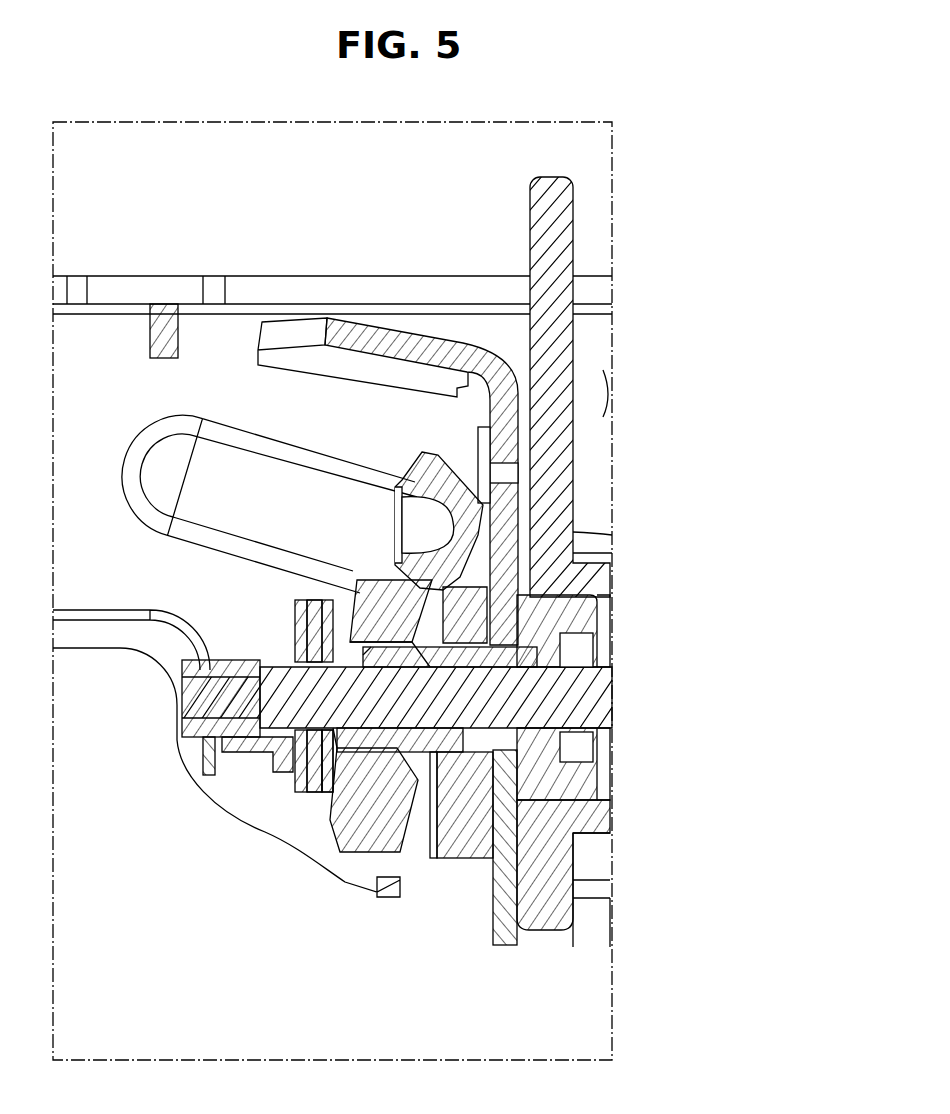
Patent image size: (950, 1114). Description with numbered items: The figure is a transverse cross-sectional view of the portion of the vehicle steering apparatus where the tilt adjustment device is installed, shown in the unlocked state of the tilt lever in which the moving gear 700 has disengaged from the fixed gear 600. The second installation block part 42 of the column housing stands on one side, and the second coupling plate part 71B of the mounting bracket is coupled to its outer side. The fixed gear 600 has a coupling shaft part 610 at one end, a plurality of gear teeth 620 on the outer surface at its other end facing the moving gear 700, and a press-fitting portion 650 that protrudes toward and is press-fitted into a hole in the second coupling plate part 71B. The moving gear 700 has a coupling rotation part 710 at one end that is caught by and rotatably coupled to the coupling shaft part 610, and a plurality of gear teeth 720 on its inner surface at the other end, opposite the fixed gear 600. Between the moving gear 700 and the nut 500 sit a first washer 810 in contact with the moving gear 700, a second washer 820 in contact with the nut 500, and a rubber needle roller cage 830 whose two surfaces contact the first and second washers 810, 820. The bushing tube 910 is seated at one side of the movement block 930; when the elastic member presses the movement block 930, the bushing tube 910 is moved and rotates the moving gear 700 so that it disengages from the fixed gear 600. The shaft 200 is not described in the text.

The second installation block part 42 is at (530, 230).
The second coupling plate part 71B is at (500, 947).
The shaft 200 is at (606, 707).
The nut 500 is at (237, 743).
The fixed gear 600 is at (463, 847).
The coupling shaft part 610 is at (413, 527).
The gear teeth 620 is at (428, 815).
The press-fitting portion 650 is at (567, 625).
The moving gear 700 is at (340, 825).
The coupling rotation part 710 is at (482, 513).
The gear teeth 720 is at (418, 795).
The first washer 810 is at (337, 803).
The second washer 820 is at (297, 780).
The needle roller cage 830 is at (300, 792).
The bushing tube 910 is at (523, 740).
The movement block 930 is at (583, 777).